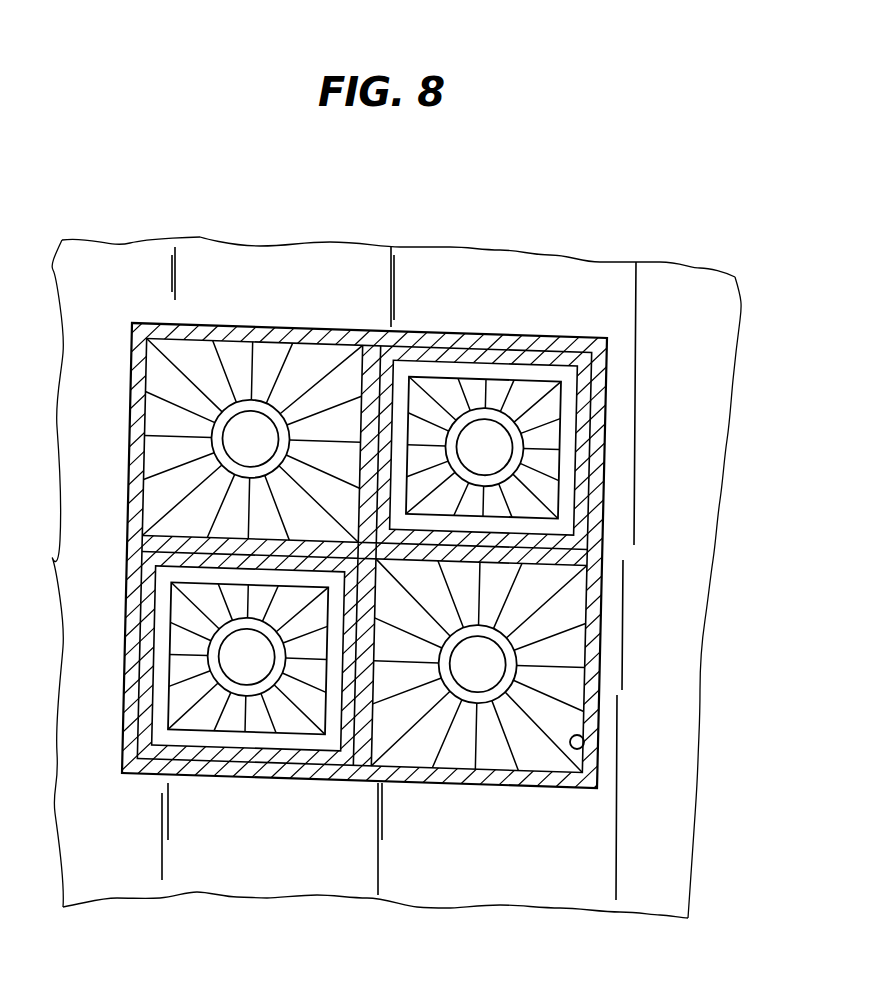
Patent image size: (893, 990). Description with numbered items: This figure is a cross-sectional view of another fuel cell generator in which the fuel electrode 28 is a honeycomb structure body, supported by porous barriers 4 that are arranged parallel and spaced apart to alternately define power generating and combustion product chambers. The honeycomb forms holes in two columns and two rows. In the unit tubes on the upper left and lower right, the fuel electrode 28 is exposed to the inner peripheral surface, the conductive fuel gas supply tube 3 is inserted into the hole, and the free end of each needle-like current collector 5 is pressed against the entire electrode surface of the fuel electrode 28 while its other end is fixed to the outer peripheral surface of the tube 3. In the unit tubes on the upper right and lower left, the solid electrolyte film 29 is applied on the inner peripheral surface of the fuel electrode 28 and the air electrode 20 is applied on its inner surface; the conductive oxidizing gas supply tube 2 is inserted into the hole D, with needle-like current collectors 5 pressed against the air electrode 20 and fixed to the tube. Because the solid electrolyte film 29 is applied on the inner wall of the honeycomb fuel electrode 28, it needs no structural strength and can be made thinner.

The conductive oxidizing gas supply tube 2 is at (525, 437).
The conductive fuel gas supply tube 3 is at (247, 405).
The porous barrier 4 is at (535, 272).
The needle-like current collector 5 is at (338, 360).
The air electrode 20 is at (563, 497).
The fuel electrode 28 is at (540, 397).
The solid electrolyte film 29 is at (583, 467).
The hole D is at (597, 750).